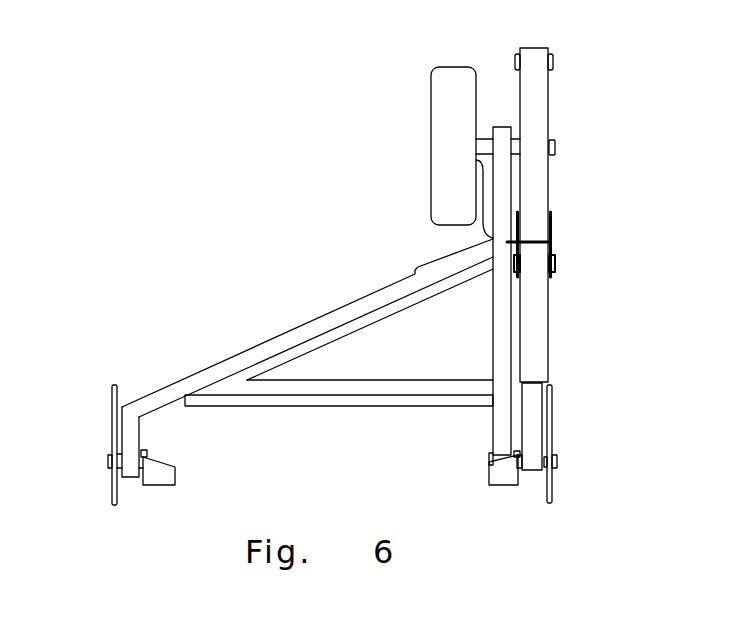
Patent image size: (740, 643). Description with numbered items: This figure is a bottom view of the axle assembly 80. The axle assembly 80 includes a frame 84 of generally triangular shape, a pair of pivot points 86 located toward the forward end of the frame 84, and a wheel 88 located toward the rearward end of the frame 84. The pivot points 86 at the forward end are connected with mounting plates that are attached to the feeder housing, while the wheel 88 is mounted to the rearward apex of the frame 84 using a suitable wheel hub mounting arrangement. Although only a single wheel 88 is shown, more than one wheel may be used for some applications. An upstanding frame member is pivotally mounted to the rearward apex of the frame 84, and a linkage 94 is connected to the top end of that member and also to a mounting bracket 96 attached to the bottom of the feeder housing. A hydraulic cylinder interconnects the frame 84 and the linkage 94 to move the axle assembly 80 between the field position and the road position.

The axle assembly 80 is at (339, 272).
The frame 84 is at (371, 394).
The pivot points 86 is at (108, 461).
The wheel 88 is at (431, 97).
The linkage 94 is at (544, 99).
The mounting bracket 96 is at (544, 325).